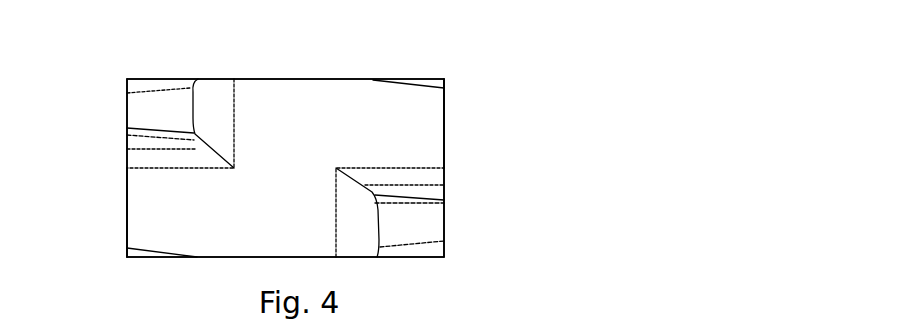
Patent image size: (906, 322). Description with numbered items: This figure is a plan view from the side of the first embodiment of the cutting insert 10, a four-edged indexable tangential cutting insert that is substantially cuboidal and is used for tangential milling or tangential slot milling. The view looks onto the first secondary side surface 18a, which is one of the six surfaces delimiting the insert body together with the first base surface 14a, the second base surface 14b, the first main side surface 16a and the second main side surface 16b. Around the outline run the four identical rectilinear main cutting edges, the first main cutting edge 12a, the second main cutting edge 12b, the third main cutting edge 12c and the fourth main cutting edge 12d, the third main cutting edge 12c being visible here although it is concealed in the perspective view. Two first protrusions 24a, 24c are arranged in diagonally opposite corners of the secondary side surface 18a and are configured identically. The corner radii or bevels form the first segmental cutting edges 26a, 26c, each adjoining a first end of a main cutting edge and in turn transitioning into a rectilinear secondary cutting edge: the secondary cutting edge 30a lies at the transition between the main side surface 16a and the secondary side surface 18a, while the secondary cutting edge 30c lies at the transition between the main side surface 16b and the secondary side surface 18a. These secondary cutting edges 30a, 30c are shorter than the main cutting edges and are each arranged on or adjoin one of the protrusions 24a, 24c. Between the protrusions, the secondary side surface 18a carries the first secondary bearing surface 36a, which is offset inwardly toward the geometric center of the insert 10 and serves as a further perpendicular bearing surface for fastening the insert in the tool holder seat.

The cutting insert 10 is at (485, 97).
The first main cutting edge 12a is at (126, 81).
The second main cutting edge 12b is at (127, 257).
The third main cutting edge 12c is at (444, 257).
The fourth main cutting edge 12d is at (444, 79).
The first base surface 14a is at (281, 75).
The second base surface 14b is at (358, 258).
The first main side surface 16a is at (125, 190).
The second main side surface 16b is at (446, 150).
The first secondary side surface 18a is at (230, 221).
The first protrusion 24a is at (163, 103).
The third first protrusion 24c is at (433, 222).
The first segmental cutting edge 26a is at (127, 90).
The third segmental cutting edge 26c is at (444, 245).
The first secondary cutting edge 30a is at (127, 120).
The third secondary cutting edge 30c is at (444, 223).
The first secondary bearing surface 36a is at (291, 151).